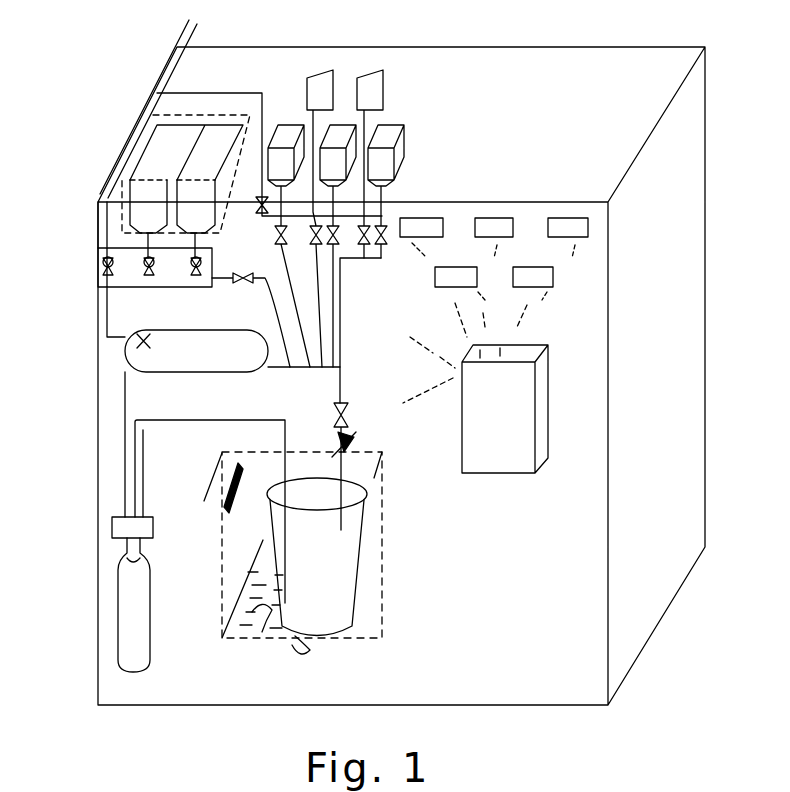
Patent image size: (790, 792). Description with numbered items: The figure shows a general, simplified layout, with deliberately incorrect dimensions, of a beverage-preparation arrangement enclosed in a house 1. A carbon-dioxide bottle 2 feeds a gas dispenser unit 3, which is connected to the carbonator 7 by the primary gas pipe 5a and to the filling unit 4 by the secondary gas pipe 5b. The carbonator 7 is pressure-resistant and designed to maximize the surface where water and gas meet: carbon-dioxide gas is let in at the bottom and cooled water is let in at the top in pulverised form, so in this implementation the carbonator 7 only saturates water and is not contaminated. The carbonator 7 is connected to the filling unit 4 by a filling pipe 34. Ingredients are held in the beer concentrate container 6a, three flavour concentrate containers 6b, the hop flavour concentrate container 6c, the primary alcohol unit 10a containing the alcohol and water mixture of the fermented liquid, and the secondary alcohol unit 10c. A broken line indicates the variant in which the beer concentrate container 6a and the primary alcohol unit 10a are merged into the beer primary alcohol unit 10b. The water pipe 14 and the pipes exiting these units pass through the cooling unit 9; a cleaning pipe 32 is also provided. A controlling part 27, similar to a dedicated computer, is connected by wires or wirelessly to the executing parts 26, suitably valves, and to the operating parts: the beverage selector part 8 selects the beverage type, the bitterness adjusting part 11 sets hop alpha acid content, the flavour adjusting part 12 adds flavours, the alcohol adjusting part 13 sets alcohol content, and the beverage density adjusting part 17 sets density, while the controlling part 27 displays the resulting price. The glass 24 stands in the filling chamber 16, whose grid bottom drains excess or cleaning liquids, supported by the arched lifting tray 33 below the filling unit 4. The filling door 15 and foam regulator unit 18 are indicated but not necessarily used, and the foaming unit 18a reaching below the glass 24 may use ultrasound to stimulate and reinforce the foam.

The house 1 is at (648, 64).
The carbon-dioxide bottle 2 is at (118, 626).
The gas dispenser unit 3 is at (112, 528).
The filling unit 4 is at (355, 437).
The primary gas pipe 5a is at (125, 447).
The secondary gas pipe 5b is at (135, 416).
The beer concentrate container 6a is at (207, 128).
The flavour concentrate containers 6b is at (392, 124).
The hop flavour concentrate container 6c is at (371, 68).
The carbonator 7 is at (126, 352).
The beverage selector part 8 is at (414, 226).
The cooling unit 9 is at (98, 266).
The primary alcohol unit 10a is at (156, 150).
The beer primary alcohol unit 10b is at (130, 190).
The secondary alcohol unit 10c is at (313, 68).
The bitterness adjusting part 11 is at (449, 268).
The flavour adjusting part 12 is at (565, 225).
The alcohol adjusting part 13 is at (493, 225).
The water pipe 14 is at (192, 22).
The filling door 15 is at (377, 470).
The filling chamber 16 is at (382, 556).
The beverage density adjusting part 17 is at (534, 268).
The foam regulator unit 18 is at (222, 490).
The foaming unit 18a is at (228, 603).
The glass 24 is at (345, 588).
The executing parts 26 is at (349, 397).
The controlling part 27 is at (545, 373).
The cleaning pipe 32 is at (262, 93).
The lifting tray 33 is at (262, 632).
The filling pipe 34 is at (322, 372).